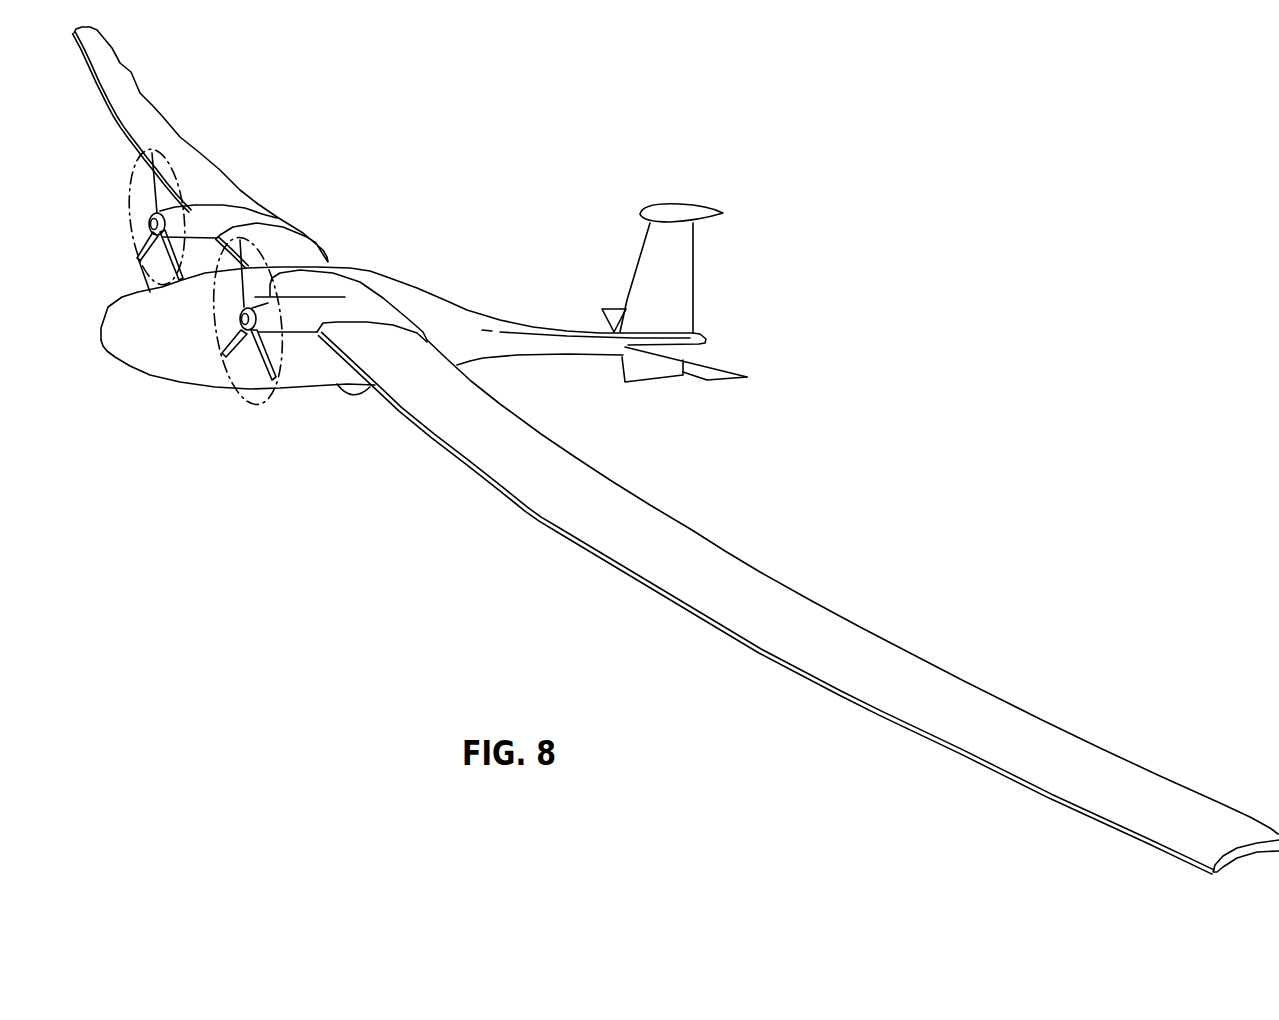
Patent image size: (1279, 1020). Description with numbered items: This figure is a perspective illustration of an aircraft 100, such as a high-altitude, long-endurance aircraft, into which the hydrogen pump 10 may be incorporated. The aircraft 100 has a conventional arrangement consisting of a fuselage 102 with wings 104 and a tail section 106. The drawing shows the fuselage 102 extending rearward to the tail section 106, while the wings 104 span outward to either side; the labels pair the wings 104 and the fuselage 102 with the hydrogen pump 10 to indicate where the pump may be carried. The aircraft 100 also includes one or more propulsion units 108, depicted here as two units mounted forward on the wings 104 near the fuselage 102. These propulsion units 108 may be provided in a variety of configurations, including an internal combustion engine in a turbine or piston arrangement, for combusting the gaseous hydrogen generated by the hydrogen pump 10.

The aircraft 100 is at (594, 128).
The hydrogen pump 10 is at (673, 450).
The fuselage 102 is at (120, 357).
The wings 104 is at (160, 120).
The tail section 106 is at (687, 203).
The propulsion units 108 is at (227, 203).